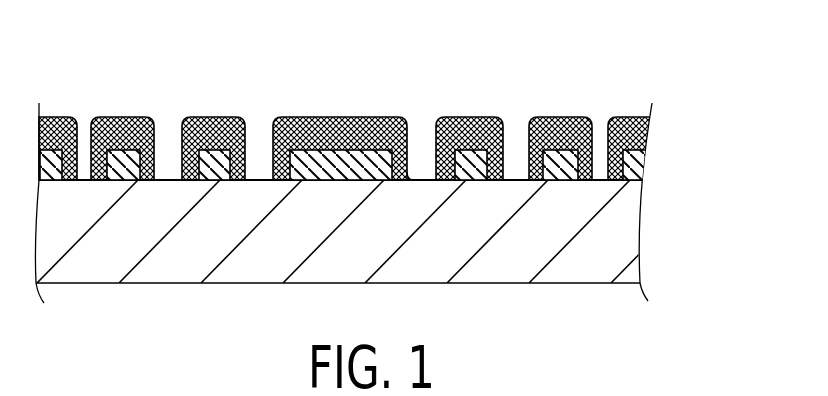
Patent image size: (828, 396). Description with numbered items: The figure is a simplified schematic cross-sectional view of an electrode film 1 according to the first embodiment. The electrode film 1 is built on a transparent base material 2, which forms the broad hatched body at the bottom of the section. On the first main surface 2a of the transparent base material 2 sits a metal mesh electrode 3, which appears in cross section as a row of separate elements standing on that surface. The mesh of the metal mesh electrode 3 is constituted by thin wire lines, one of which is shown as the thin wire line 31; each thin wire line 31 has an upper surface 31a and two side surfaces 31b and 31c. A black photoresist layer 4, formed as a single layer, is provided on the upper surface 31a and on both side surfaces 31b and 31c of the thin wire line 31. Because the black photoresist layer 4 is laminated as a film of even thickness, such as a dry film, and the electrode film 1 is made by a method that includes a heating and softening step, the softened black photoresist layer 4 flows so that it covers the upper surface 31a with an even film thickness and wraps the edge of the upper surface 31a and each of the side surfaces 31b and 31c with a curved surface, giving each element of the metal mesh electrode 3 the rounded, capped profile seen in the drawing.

The electrode film 1 is at (67, 30).
The transparent base material 2 is at (623, 230).
The first main surface 2a is at (170, 178).
The metal mesh electrode 3 is at (352, 101).
The thin wire line 31 is at (557, 168).
The upper surface 31a is at (373, 150).
The side surface 31b is at (277, 162).
The side surface 31c is at (416, 150).
The black photoresist layer 4 is at (341, 125).